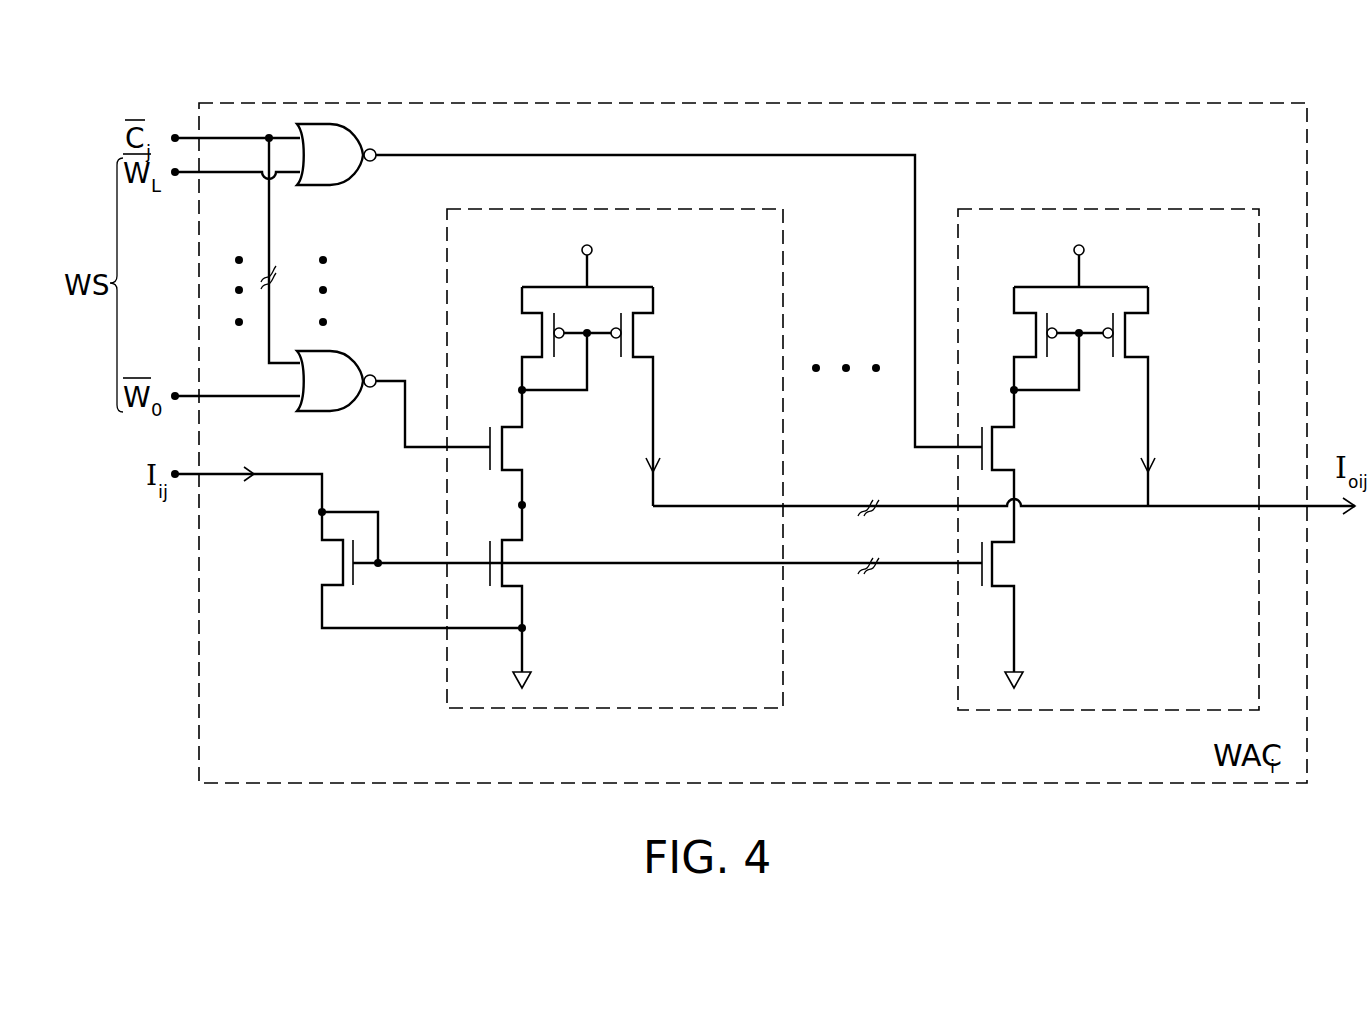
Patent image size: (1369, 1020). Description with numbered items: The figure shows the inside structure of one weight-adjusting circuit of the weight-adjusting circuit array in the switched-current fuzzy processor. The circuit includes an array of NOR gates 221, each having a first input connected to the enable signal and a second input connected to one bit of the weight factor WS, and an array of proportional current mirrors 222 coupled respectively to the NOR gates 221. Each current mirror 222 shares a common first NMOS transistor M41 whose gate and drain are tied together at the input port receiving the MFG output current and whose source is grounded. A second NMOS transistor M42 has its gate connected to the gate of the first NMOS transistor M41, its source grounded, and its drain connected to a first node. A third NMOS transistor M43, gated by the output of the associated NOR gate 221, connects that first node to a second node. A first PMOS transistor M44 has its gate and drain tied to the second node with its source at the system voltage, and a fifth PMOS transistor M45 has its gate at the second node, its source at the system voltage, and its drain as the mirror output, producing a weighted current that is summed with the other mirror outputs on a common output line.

The NOR gate 221 is at (333, 187).
The proportional current mirror 222 is at (853, 440).
The first NMOS transistor M41 is at (402, 570).
The second NMOS transistor M42 is at (781, 596).
The third NMOS transistor M43 is at (776, 448).
The first PMOS transistor M44 is at (772, 338).
The fifth PMOS transistor M45 is at (906, 396).